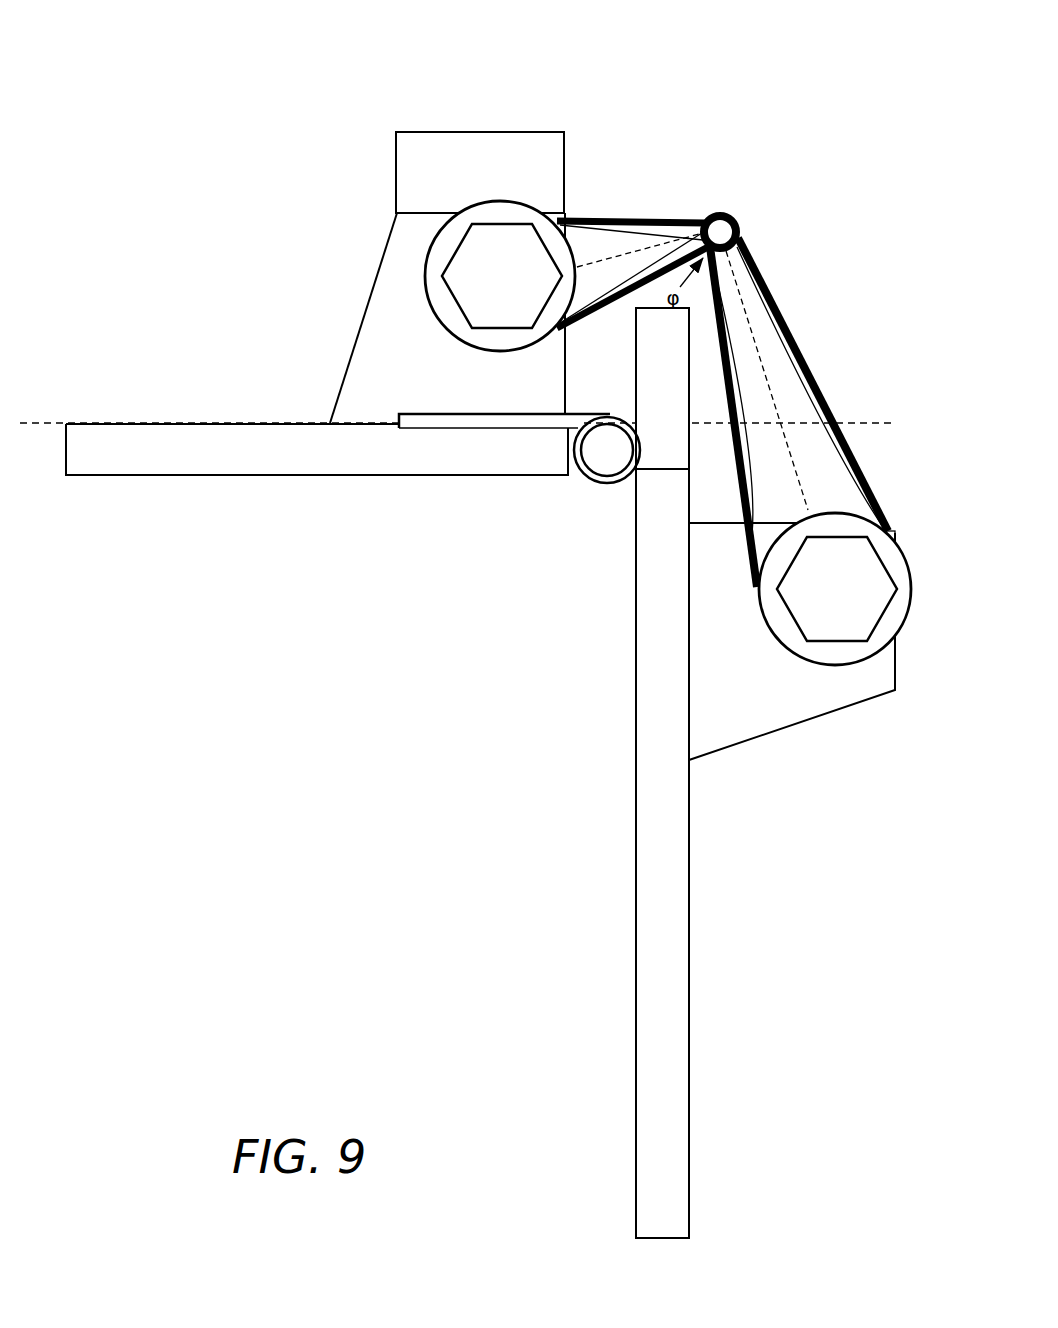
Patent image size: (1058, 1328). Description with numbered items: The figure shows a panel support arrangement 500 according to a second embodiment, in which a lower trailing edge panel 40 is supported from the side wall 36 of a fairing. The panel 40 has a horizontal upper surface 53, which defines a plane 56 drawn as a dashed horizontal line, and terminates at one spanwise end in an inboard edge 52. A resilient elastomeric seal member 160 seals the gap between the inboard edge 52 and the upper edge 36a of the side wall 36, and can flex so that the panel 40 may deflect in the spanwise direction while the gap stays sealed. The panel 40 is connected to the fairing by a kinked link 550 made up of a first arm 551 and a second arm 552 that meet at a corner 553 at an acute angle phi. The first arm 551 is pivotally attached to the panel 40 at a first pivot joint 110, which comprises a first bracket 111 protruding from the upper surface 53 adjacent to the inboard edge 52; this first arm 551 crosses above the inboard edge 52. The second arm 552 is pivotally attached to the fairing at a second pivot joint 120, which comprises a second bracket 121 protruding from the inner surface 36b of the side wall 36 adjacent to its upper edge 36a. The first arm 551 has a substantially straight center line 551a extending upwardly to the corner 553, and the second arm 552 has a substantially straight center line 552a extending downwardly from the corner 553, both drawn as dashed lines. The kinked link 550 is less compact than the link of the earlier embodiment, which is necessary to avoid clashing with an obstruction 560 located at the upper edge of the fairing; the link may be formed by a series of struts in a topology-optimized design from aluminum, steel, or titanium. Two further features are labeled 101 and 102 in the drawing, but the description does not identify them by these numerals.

The panel support arrangement 500 is at (797, 95).
The first pressing unit 101 is at (573, 200).
The second pressing unit 102 is at (742, 572).
The first pivot joint 110 is at (478, 257).
The first bracket 111 is at (383, 353).
The second pivot joint 120 is at (842, 622).
The second bracket 121 is at (790, 710).
The first lower trailing edge panel 40 is at (147, 448).
The upper surface 53 is at (213, 420).
The inboard edge 52 is at (572, 449).
The resilient elastomeric seal member 160 is at (603, 487).
The side wall 36 is at (665, 962).
The upper edge 36a is at (656, 468).
The inner surface 36b is at (690, 1003).
The plane 56 is at (875, 427).
The kinked link 550 is at (764, 227).
The first arm 551 is at (658, 218).
The center line 551a is at (610, 255).
The second arm 552 is at (823, 390).
The center line 552a is at (763, 363).
The corner 553 is at (727, 212).
The obstruction 560 is at (670, 341).